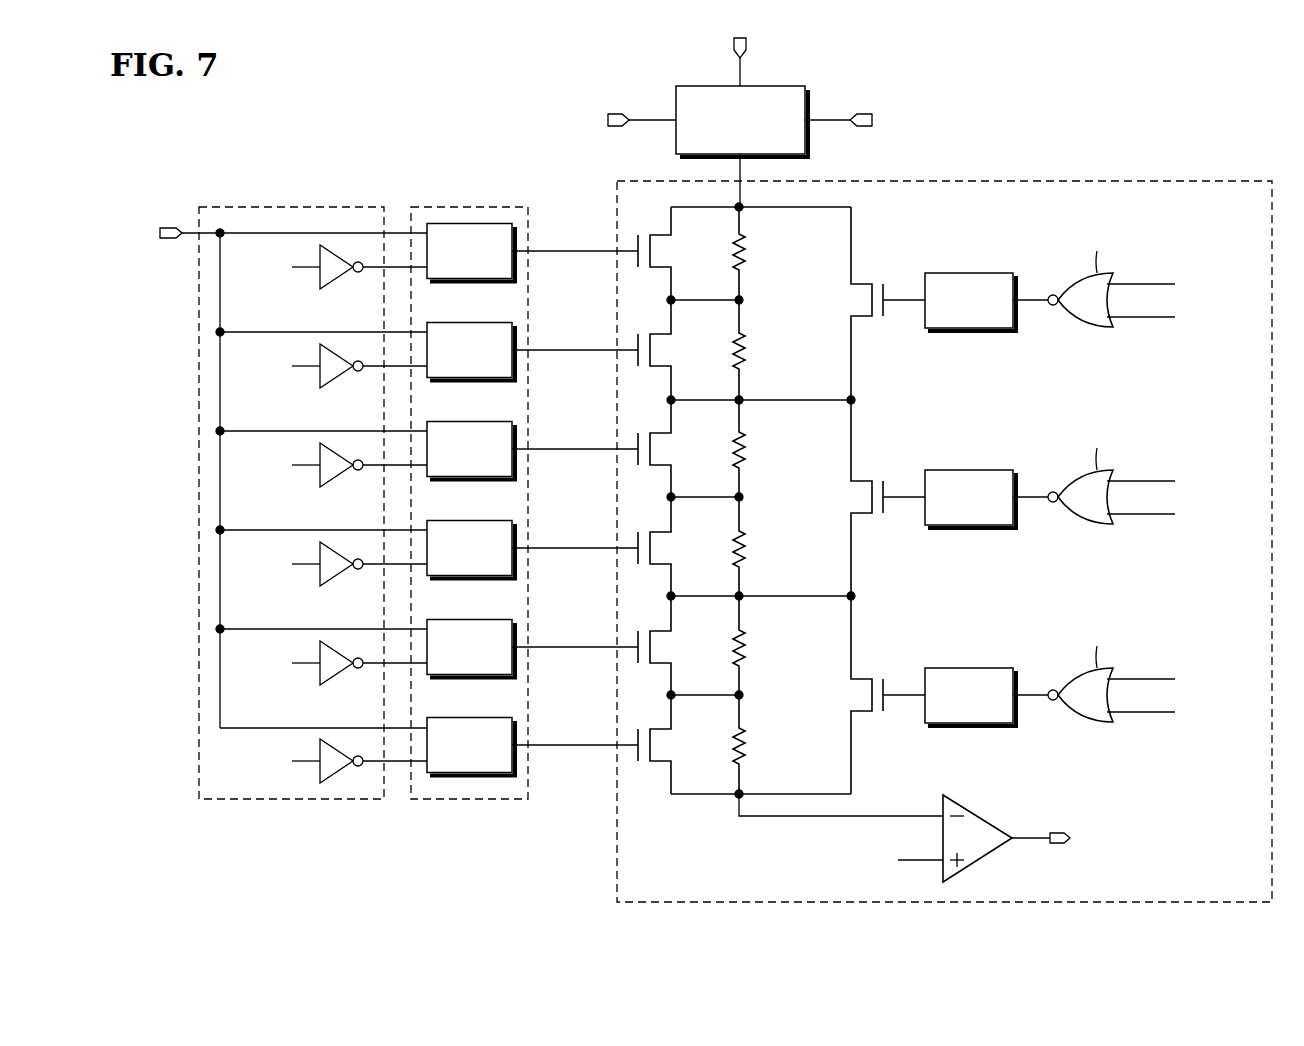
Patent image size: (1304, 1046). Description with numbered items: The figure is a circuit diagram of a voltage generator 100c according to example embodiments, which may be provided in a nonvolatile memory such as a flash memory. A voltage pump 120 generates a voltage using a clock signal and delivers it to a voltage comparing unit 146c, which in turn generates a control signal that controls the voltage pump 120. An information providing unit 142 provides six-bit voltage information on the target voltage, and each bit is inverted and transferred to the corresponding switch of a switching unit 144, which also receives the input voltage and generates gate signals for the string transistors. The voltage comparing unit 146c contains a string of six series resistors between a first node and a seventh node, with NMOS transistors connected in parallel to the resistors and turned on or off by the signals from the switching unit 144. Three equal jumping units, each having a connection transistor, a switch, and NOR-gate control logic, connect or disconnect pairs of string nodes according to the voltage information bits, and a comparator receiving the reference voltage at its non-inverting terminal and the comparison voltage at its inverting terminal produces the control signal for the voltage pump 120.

The voltage generator 100c is at (1212, 46).
The voltage pump 120 is at (772, 86).
The information providing unit 142 is at (297, 208).
The switching unit 144 is at (473, 208).
The voltage comparing unit 146c is at (947, 182).